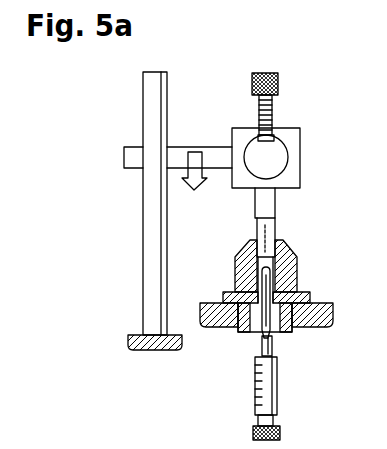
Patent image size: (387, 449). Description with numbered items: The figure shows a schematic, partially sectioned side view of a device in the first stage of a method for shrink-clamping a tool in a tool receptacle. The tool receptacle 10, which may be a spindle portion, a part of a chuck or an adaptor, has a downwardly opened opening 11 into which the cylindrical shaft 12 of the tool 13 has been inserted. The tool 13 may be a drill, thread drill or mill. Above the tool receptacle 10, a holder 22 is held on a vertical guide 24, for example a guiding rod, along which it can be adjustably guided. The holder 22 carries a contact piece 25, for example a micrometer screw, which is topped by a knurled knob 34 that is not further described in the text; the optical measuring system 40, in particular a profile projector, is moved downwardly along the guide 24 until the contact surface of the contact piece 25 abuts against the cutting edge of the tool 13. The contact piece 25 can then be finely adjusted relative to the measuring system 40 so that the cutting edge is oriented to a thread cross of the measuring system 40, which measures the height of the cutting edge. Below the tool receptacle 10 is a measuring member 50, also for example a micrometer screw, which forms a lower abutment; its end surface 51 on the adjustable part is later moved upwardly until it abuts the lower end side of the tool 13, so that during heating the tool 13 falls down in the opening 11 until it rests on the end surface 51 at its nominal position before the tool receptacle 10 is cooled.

The tool receptacle 10 is at (287, 258).
The opening 11 is at (262, 256).
The cylindrical shaft 12 is at (268, 231).
The tool 13 is at (262, 206).
The holder 22 is at (216, 157).
The vertical guide 24 is at (150, 253).
The contact piece 25 is at (273, 112).
The knurled knob 34 is at (278, 77).
The optical measuring system 40 is at (292, 137).
The measuring member 50 is at (262, 392).
The end surface 51 is at (287, 268).